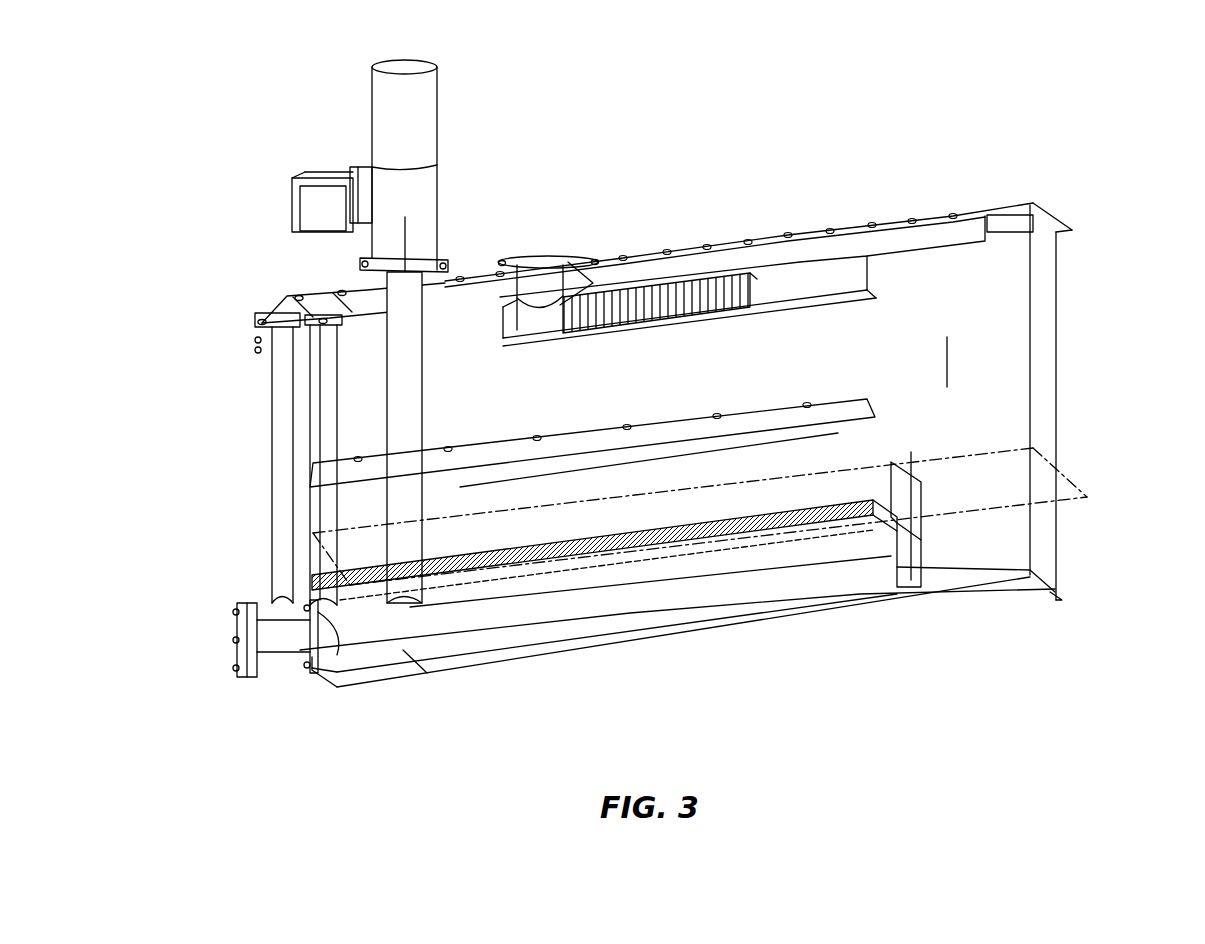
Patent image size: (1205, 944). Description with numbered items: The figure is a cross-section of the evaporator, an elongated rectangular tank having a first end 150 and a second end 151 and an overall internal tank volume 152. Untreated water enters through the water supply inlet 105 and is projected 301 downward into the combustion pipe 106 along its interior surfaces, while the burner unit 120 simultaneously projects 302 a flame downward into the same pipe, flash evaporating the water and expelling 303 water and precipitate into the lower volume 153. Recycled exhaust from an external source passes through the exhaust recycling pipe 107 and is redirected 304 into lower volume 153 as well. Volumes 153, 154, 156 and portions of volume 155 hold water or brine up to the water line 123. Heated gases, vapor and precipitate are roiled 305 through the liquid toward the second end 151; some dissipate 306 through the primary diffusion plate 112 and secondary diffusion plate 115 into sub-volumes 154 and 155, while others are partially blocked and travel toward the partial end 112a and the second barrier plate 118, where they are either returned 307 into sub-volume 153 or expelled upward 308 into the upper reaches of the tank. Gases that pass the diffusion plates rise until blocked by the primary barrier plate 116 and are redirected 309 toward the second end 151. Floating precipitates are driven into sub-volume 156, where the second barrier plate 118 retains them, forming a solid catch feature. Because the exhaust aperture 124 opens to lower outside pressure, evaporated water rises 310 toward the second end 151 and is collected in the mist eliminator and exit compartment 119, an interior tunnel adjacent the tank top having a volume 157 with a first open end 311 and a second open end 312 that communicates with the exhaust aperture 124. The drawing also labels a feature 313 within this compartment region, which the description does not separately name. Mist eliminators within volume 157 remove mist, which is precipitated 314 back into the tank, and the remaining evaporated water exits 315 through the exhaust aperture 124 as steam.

The water supply inlet 105 is at (352, 290).
The combustion pipe 106 is at (383, 427).
The exhaust recycling pipe 107 is at (278, 380).
The primary diffusion plate 112 is at (758, 550).
The partial end 112a is at (895, 590).
The secondary diffusion plate 115 is at (655, 560).
The primary barrier plate 116 is at (867, 400).
The second barrier plate 118 is at (913, 592).
The mist eliminator and exit compartment 119 is at (823, 262).
The burner unit 120 is at (417, 127).
The water line 123 is at (1047, 457).
The exhaust aperture 124 is at (553, 257).
The first end 150 is at (205, 520).
The second end 151 is at (1115, 498).
The overall internal tank volume 152 is at (486, 540).
The lower volume 153 is at (607, 593).
The sub-volume 154 is at (800, 612).
The sub-volume 155 is at (692, 492).
The sub-volume 156 is at (1000, 537).
The volume 157 is at (790, 288).
The projecting of water 301 is at (400, 332).
The projecting of flame 302 is at (385, 357).
The expelling 303 is at (350, 583).
The redirecting of exhaust 304 is at (268, 640).
The roiling 305 is at (520, 597).
The dissipating 306 is at (570, 593).
The returning 307 is at (830, 565).
The expelling upward 308 is at (910, 470).
The redirecting 309 is at (765, 455).
The rising 310 is at (949, 362).
The first open end 311 is at (855, 277).
The second open end 312 is at (593, 282).
The vent grille 313 is at (735, 278).
The precipitating of mist 314 is at (695, 322).
The exiting 315 is at (537, 307).